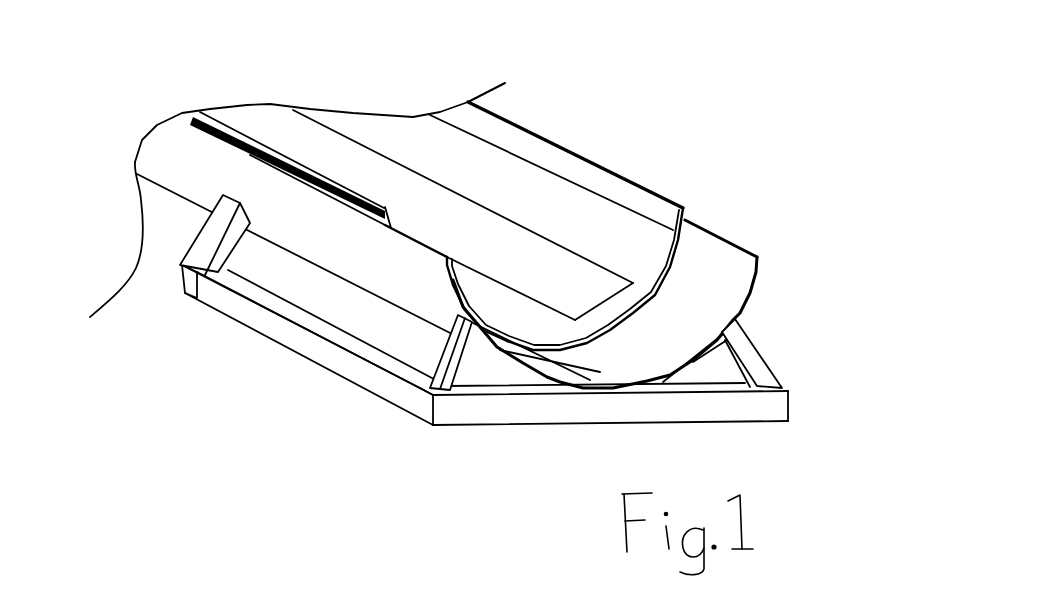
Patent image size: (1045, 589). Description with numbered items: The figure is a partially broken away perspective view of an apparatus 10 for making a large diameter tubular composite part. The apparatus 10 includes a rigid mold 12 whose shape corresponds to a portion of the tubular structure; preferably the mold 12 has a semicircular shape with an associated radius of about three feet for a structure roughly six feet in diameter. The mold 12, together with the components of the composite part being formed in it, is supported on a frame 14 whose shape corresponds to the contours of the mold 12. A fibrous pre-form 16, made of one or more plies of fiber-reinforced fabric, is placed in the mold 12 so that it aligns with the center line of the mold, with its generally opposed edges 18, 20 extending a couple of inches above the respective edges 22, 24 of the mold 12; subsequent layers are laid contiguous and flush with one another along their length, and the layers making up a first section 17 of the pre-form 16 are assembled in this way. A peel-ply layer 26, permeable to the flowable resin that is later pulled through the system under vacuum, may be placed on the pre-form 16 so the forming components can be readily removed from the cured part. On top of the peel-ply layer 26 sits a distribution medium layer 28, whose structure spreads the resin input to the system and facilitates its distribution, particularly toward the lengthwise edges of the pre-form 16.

The apparatus 10 is at (745, 63).
The rigid mold 12 is at (496, 281).
The frame 14 is at (763, 348).
The fibrous pre-form 16 is at (695, 216).
The first section 17 is at (580, 168).
The edge of pre-form 18 is at (540, 132).
The edge of pre-form 20 is at (385, 205).
The edge of mold 22 is at (753, 247).
The edge of mold 24 is at (448, 255).
The peel-ply layer 26 is at (610, 203).
The distribution medium layer 28 is at (500, 212).